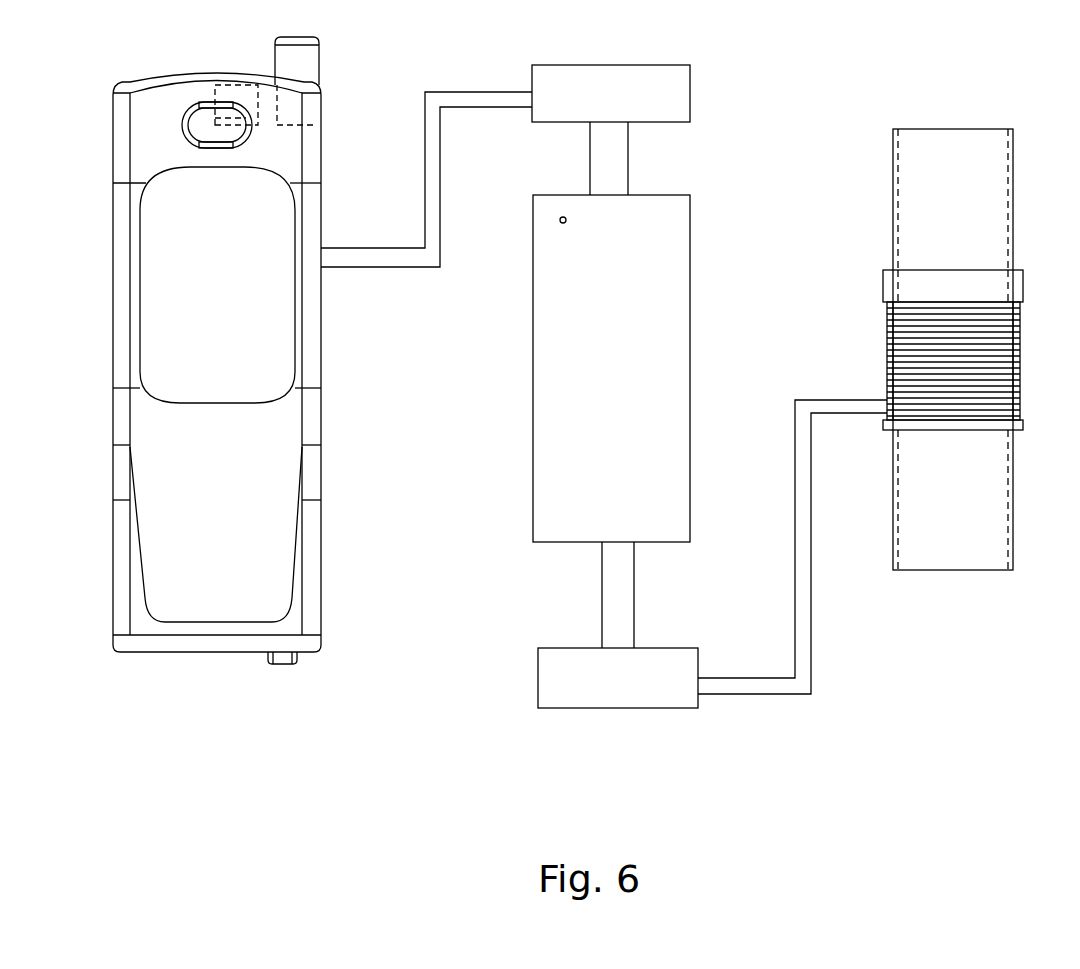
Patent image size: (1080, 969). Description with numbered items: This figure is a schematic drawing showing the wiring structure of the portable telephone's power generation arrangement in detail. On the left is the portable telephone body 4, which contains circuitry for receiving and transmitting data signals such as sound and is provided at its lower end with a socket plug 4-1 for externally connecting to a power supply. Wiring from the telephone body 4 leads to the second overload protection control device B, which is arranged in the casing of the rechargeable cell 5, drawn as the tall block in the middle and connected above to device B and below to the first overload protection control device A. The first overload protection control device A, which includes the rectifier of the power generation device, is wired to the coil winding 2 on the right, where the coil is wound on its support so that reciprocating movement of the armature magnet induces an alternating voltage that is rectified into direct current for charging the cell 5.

The coil winding 2 is at (953, 129).
The portable telephone body 4 is at (217, 344).
The socket plug 4-1 is at (283, 666).
The rechargeable cell 5 is at (611, 368).
The first overload protection control device A is at (618, 678).
The second overload protection control device B is at (611, 93).